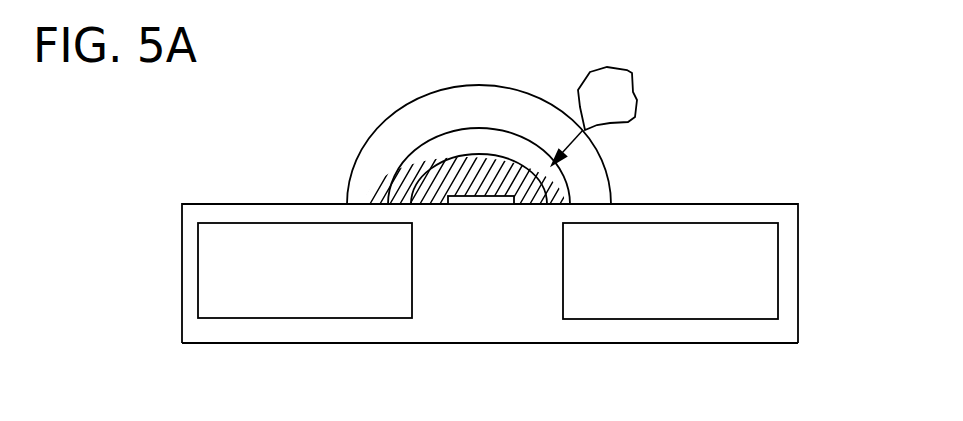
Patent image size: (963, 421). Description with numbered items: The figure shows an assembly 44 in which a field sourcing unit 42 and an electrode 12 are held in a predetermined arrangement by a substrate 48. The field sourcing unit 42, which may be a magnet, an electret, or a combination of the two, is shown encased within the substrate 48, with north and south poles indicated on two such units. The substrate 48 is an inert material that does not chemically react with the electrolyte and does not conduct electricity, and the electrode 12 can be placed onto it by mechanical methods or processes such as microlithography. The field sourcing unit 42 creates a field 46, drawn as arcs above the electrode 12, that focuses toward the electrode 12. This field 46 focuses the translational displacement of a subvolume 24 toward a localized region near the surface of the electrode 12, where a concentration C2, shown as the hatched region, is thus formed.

The assembly 44 is at (757, 173).
The substrate 48 is at (213, 333).
The field sourcing unit 42 is at (335, 295).
The field 46 is at (430, 92).
The concentration C2 is at (373, 183).
The electrode 12 is at (480, 198).
The subvolume 24 is at (637, 93).